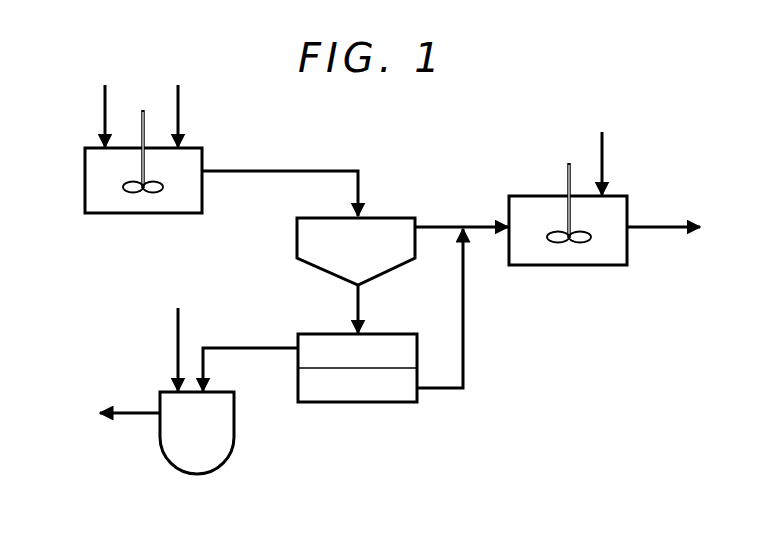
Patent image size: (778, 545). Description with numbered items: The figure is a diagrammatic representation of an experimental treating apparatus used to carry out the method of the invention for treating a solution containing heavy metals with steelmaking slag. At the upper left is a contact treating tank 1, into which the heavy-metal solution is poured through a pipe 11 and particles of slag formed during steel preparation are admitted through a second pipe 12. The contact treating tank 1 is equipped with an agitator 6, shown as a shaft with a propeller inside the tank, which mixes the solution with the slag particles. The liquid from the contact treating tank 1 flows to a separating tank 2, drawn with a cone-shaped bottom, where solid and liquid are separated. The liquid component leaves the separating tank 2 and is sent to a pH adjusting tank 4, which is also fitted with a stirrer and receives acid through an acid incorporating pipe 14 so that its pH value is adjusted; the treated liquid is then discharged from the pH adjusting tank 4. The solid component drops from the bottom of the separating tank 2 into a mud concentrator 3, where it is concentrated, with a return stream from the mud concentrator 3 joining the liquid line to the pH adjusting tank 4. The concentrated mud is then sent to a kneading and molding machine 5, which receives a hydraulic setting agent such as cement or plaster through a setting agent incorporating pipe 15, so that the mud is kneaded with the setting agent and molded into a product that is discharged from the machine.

The contact treating tank 1 is at (147, 207).
The separating tank 2 is at (322, 258).
The mud concentrator 3 is at (342, 393).
The pH adjusting tank 4 is at (557, 253).
The kneading and molding machine 5 is at (228, 428).
The agitator 6 is at (132, 189).
The pipe 11 is at (104, 111).
The pipe 12 is at (179, 114).
The acid incorporating pipe 14 is at (603, 152).
The setting agent incorporating pipe 15 is at (177, 355).